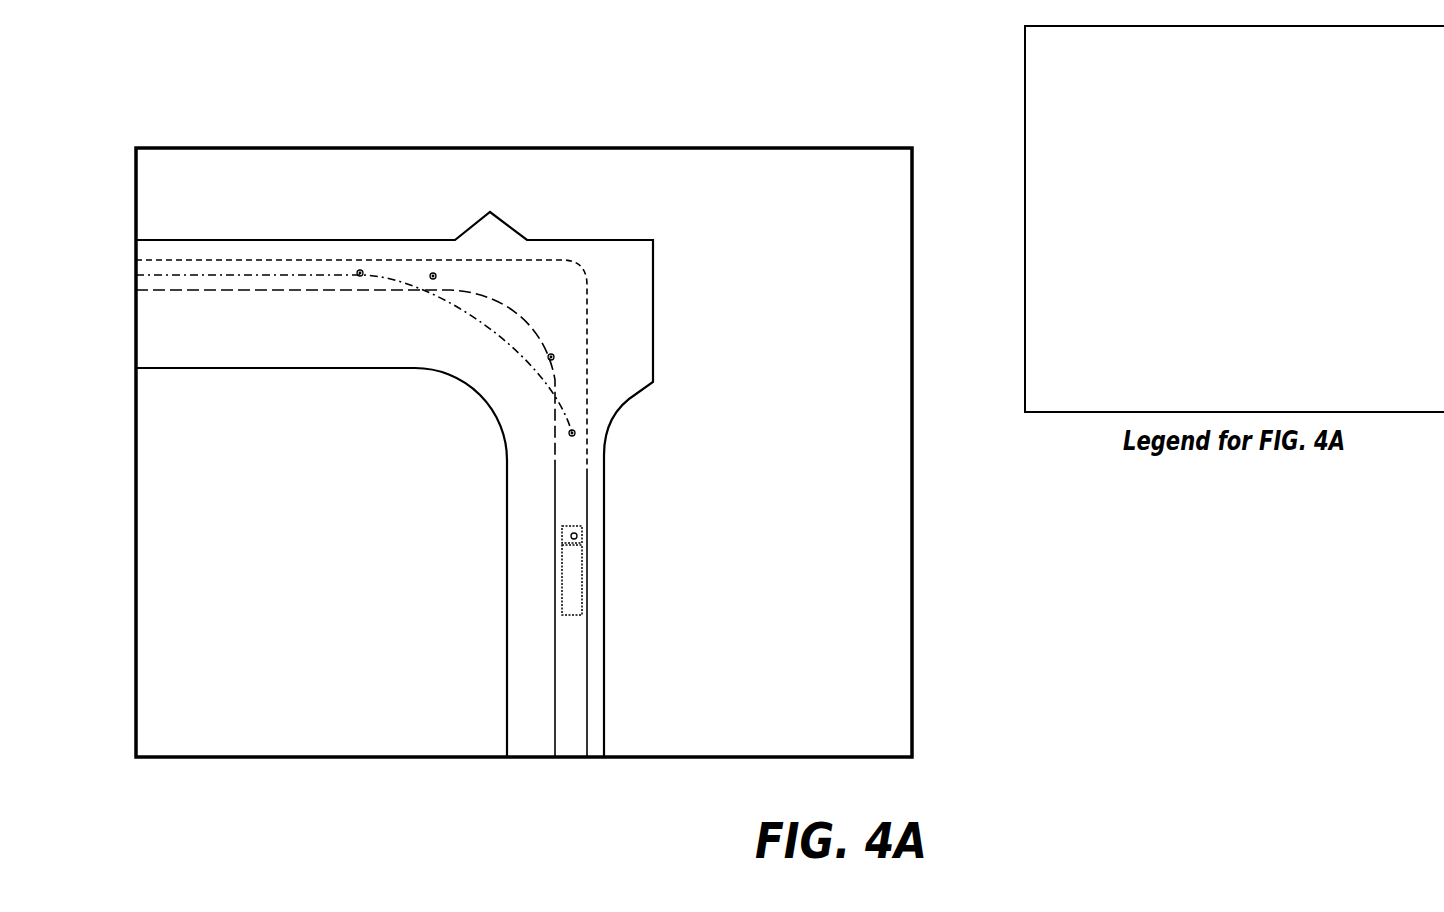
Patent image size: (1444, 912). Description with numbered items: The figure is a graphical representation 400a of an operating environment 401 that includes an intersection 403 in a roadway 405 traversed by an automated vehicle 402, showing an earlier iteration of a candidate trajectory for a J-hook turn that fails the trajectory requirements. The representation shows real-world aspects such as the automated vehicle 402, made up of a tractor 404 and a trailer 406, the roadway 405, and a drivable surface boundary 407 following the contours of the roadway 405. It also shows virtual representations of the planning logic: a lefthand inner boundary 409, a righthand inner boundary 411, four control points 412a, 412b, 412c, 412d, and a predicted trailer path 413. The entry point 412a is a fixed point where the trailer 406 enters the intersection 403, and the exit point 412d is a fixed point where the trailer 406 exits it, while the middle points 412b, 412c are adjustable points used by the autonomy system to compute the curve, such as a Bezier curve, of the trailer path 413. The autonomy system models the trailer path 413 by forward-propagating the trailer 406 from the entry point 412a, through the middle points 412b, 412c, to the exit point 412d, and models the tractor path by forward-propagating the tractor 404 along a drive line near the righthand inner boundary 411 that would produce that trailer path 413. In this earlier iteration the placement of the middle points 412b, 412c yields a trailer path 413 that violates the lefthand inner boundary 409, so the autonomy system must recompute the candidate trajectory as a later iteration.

The graphical representation 400a is at (184, 82).
The operating environment 401 is at (746, 220).
The automated vehicle 402 is at (592, 575).
The intersection 403 is at (437, 398).
The tractor 404 is at (578, 532).
The roadway 405 is at (273, 368).
The trailer 406 is at (572, 593).
The drivable surface boundary 407 is at (1055, 55).
The lefthand inner boundary 409 is at (1055, 105).
The righthand inner boundary 411 is at (1055, 155).
The predicted trailer path 413 is at (1055, 205).
The entry point 412a is at (908, 379).
The middle point 412b is at (986, 359).
The middle point 412c is at (906, 265).
The exit point 412d is at (806, 311).